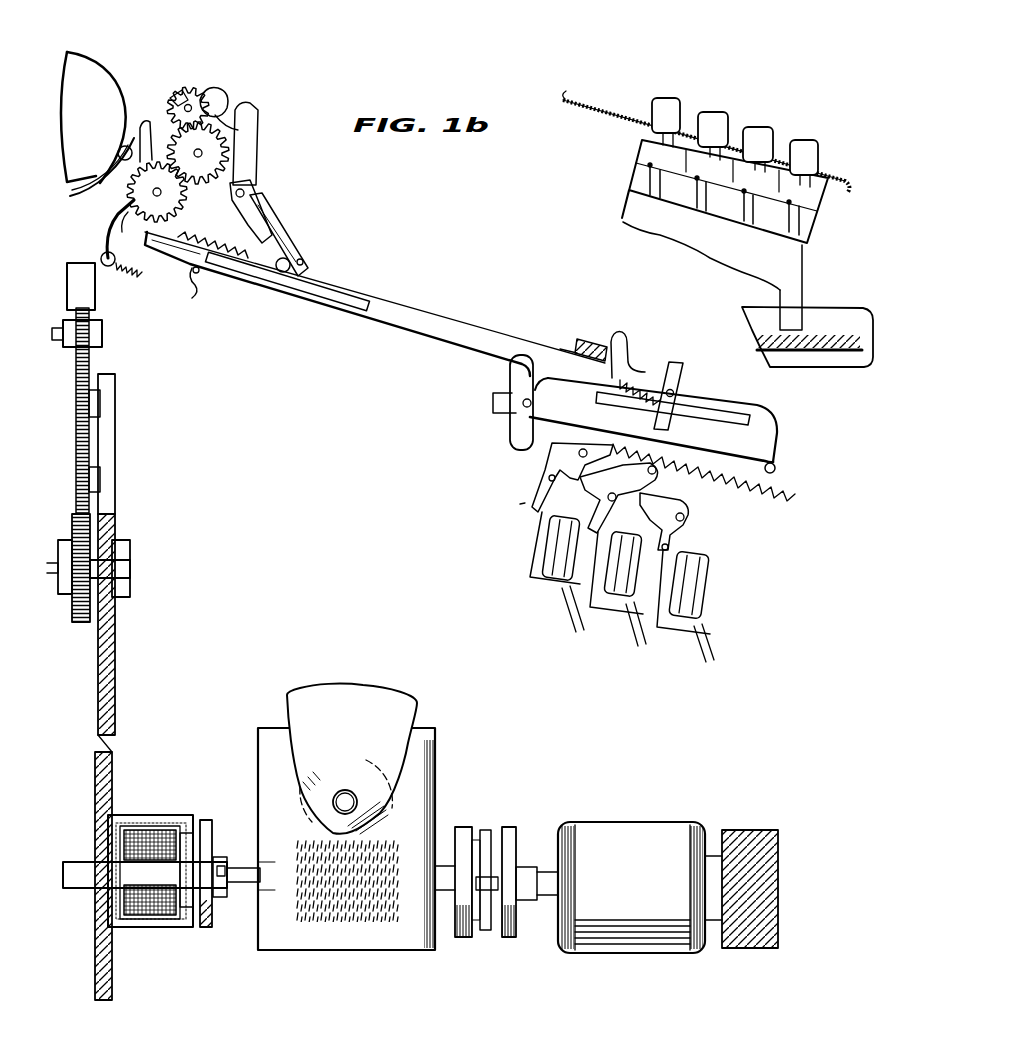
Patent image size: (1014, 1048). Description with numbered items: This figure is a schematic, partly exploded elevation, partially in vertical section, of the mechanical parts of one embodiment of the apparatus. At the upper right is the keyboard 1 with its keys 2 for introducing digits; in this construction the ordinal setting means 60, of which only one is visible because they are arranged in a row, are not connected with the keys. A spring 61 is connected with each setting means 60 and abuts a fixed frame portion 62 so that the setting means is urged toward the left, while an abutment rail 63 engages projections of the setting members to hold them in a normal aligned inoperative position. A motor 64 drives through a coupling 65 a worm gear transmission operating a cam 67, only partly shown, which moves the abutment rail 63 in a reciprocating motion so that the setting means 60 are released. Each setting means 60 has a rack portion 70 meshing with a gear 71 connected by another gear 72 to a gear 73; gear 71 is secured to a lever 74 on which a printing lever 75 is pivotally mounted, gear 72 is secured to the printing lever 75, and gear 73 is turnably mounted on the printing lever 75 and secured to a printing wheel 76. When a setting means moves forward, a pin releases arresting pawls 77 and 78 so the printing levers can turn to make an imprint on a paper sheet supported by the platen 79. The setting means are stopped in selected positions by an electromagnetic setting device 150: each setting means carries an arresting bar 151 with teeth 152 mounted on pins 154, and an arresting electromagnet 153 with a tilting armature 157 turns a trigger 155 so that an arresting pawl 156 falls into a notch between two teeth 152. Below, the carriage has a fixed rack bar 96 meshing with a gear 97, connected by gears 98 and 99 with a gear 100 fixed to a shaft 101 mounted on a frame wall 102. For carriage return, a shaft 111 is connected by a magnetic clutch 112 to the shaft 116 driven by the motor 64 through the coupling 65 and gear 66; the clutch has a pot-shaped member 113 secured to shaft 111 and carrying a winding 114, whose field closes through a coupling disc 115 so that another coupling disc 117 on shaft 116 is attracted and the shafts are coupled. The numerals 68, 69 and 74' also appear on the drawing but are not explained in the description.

The keyboard 1 is at (627, 175).
The keys 2 is at (800, 138).
The setting means 60 is at (385, 304).
The spring 61 is at (640, 384).
The fixed frame portion 62 is at (679, 366).
The abutment rail 63 is at (590, 341).
The motor 64 is at (612, 935).
The coupling 65 is at (486, 830).
The gear 66 is at (358, 926).
The cam 67 is at (377, 690).
The hook 68 is at (196, 290).
The hole 69 is at (684, 391).
The rack portion 70 is at (232, 228).
The gear 71 is at (150, 160).
The gear 72 is at (222, 147).
The gear 73 is at (176, 100).
The lever 74 is at (259, 133).
The spring 74' is at (149, 265).
The printing lever 75 is at (217, 90).
The printing wheel 76 is at (186, 87).
The arresting pawl 77 is at (287, 238).
The arresting pawl 78 is at (256, 172).
The platen 79 is at (88, 62).
The rack bar 96 is at (97, 300).
The gear 97 is at (103, 340).
The gear 98 is at (100, 425).
The gear 99 is at (98, 502).
The gear 100 is at (65, 588).
The shaft 101 is at (130, 570).
The frame wall 102 is at (112, 722).
The shaft 111 is at (74, 878).
The magnetic clutch 112 is at (150, 806).
The pot-shaped member 113 is at (156, 946).
The winding 114 is at (125, 927).
The coupling disc 115 is at (206, 820).
The shaft 116 is at (240, 892).
The coupling disc 117 is at (222, 832).
The electromagnetic setting device 150 is at (518, 508).
The arresting bar 151 is at (785, 478).
The teeth 152 is at (737, 490).
The arresting electromagnet 153 is at (553, 548).
The pins 154 is at (524, 400).
The trigger 155 is at (672, 527).
The arresting pawl 156 is at (573, 463).
The tilting armature 157 is at (549, 585).